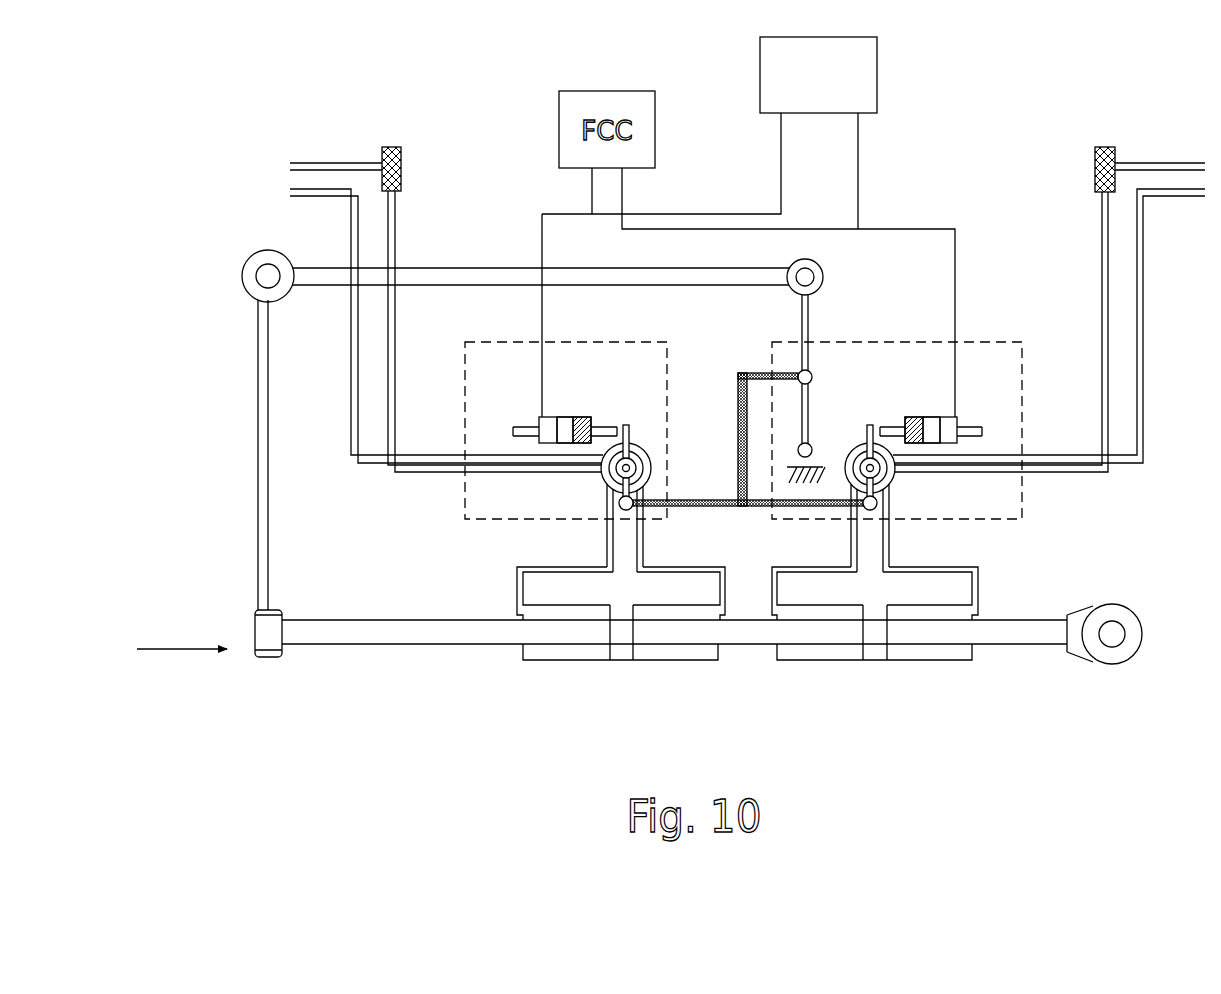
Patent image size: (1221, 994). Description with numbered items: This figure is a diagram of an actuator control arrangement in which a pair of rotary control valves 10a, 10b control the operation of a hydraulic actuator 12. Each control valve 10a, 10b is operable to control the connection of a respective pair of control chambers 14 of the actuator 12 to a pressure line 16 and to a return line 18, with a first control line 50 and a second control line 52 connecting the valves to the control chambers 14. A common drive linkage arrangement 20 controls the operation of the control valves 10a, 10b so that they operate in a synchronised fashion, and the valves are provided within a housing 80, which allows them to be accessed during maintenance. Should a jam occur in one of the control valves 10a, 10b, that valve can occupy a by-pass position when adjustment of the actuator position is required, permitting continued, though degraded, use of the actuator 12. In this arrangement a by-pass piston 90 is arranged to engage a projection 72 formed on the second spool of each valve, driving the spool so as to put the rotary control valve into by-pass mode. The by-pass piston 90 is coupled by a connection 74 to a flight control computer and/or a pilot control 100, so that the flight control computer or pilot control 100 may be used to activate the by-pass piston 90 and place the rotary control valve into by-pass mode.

The pilot control 100 is at (801, 83).
The pressure line 16 is at (395, 338).
The return line 18 is at (351, 350).
The common drive linkage arrangement 20 is at (810, 325).
The housing 80 is at (618, 341).
The connection 74 is at (743, 395).
The by-pass piston 90 is at (565, 422).
The projection 72 is at (628, 424).
The control valve 10a is at (650, 439).
The control valve 10b is at (852, 442).
The first control line 50 is at (572, 567).
The second control line 52 is at (668, 567).
The control chambers 14 is at (660, 655).
The hydraulic actuator 12 is at (639, 698).